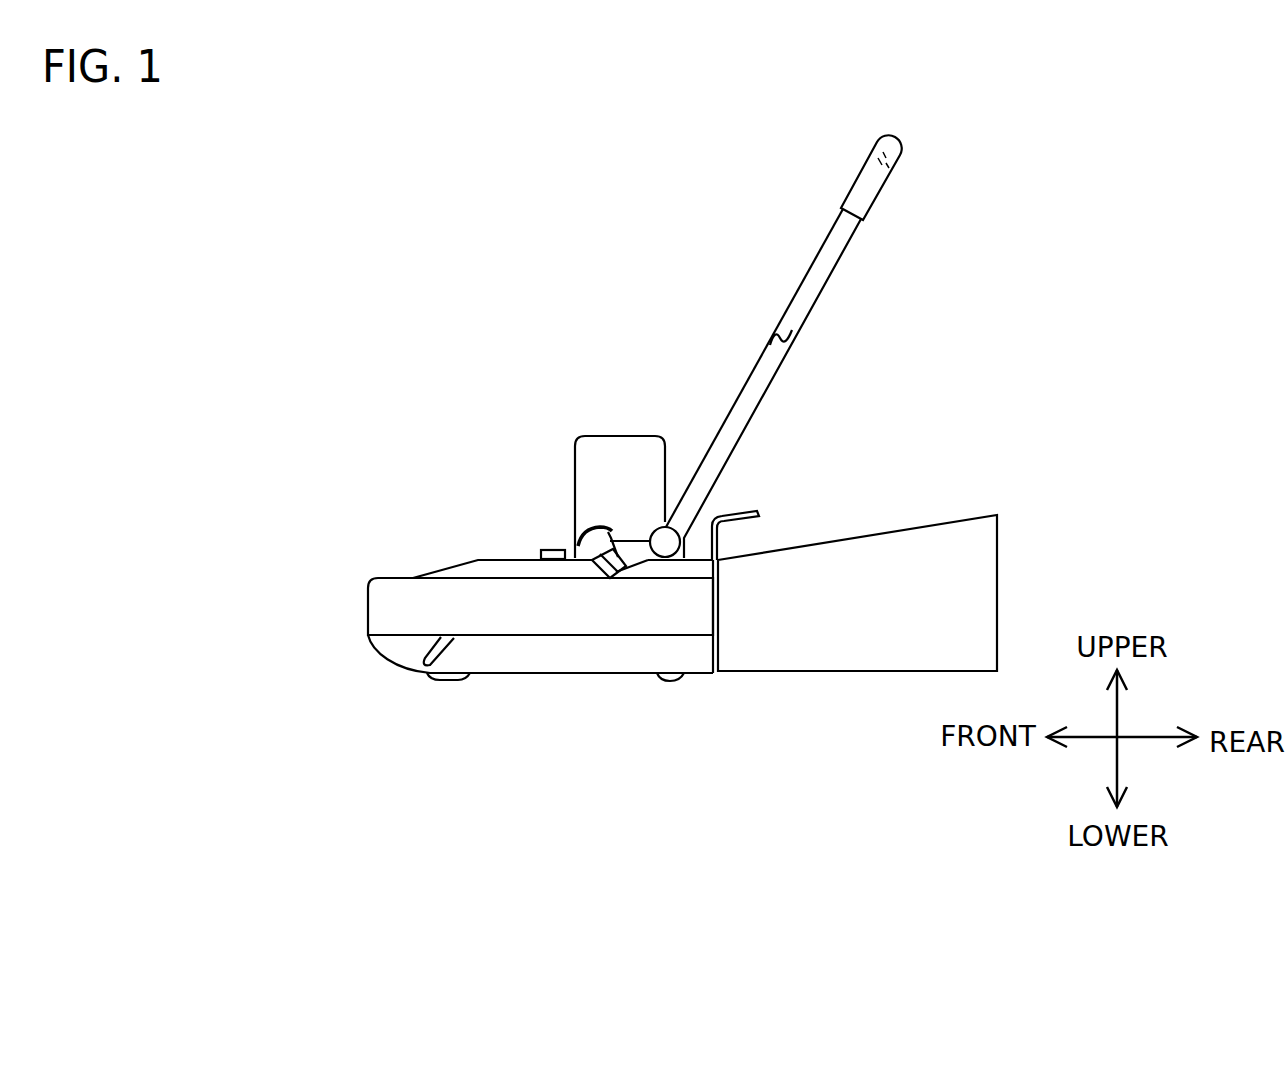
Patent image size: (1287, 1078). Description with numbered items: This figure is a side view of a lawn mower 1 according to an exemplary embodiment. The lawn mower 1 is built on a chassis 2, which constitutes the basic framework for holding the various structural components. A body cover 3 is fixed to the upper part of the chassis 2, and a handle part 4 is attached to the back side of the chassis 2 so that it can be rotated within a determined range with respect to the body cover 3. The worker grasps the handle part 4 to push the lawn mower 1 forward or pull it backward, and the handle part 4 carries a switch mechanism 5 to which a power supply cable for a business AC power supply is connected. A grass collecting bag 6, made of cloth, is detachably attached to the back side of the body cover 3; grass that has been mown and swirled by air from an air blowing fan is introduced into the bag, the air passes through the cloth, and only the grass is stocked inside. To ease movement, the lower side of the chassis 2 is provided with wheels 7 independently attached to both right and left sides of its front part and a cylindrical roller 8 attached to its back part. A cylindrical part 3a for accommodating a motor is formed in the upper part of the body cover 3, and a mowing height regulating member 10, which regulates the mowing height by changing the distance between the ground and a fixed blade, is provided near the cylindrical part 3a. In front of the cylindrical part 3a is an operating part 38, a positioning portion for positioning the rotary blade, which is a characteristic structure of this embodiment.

The lawn mower 1 is at (392, 248).
The chassis 2 is at (553, 658).
The body cover 3 is at (420, 598).
The cylindrical part 3a is at (606, 432).
The handle part 4 is at (893, 143).
The switch mechanism 5 is at (880, 163).
The grass collecting bag 6 is at (873, 565).
The wheels 7 is at (448, 677).
The roller 8 is at (670, 678).
The mowing height regulating member 10 is at (587, 548).
The operating part 38 is at (550, 550).